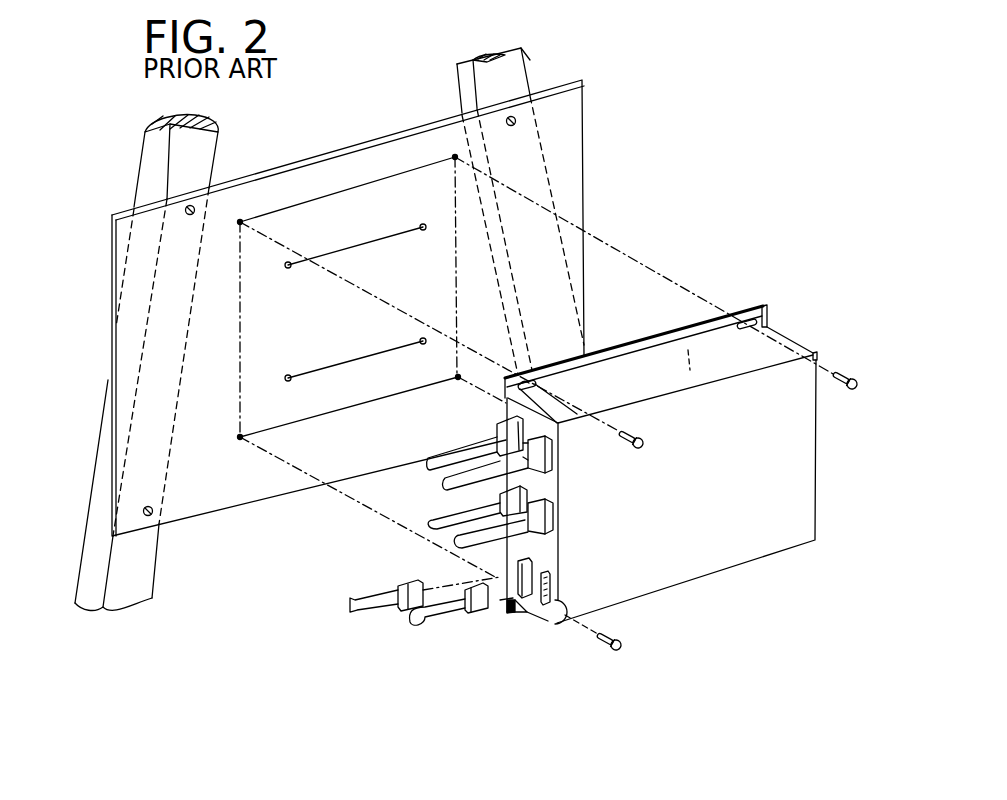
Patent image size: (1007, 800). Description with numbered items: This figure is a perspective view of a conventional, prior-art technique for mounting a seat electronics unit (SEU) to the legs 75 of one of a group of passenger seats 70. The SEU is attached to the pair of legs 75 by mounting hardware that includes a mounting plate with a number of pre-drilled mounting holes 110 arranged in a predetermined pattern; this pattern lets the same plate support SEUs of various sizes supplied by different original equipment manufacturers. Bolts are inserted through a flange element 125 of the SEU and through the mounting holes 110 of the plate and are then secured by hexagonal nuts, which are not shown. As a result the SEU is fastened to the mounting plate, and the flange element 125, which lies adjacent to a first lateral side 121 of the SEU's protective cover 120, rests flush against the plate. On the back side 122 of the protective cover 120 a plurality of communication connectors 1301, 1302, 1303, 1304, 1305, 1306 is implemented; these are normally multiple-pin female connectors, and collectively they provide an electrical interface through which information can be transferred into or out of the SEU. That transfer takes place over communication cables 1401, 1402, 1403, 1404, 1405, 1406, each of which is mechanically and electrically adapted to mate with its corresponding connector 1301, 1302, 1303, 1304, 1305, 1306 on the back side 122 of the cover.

The passenger seat 70 is at (627, 67).
The legs 75 is at (210, 160).
The mounting holes 110 is at (289, 264).
The protective cover 120 is at (843, 372).
The first lateral side 121 is at (698, 326).
The back side 122 is at (527, 607).
The flange element 125 is at (607, 345).
The communication connector 1301 is at (530, 420).
The communication connector 1302 is at (556, 452).
The communication connector 1303 is at (552, 498).
The communication connector 1304 is at (566, 528).
The communication connector 1305 is at (532, 560).
The communication connector 1306 is at (560, 626).
The communication cable 1401 is at (448, 455).
The communication cable 1402 is at (452, 482).
The communication cable 1403 is at (432, 524).
The communication cable 1404 is at (457, 545).
The communication cable 1405 is at (356, 604).
The communication cable 1406 is at (437, 623).